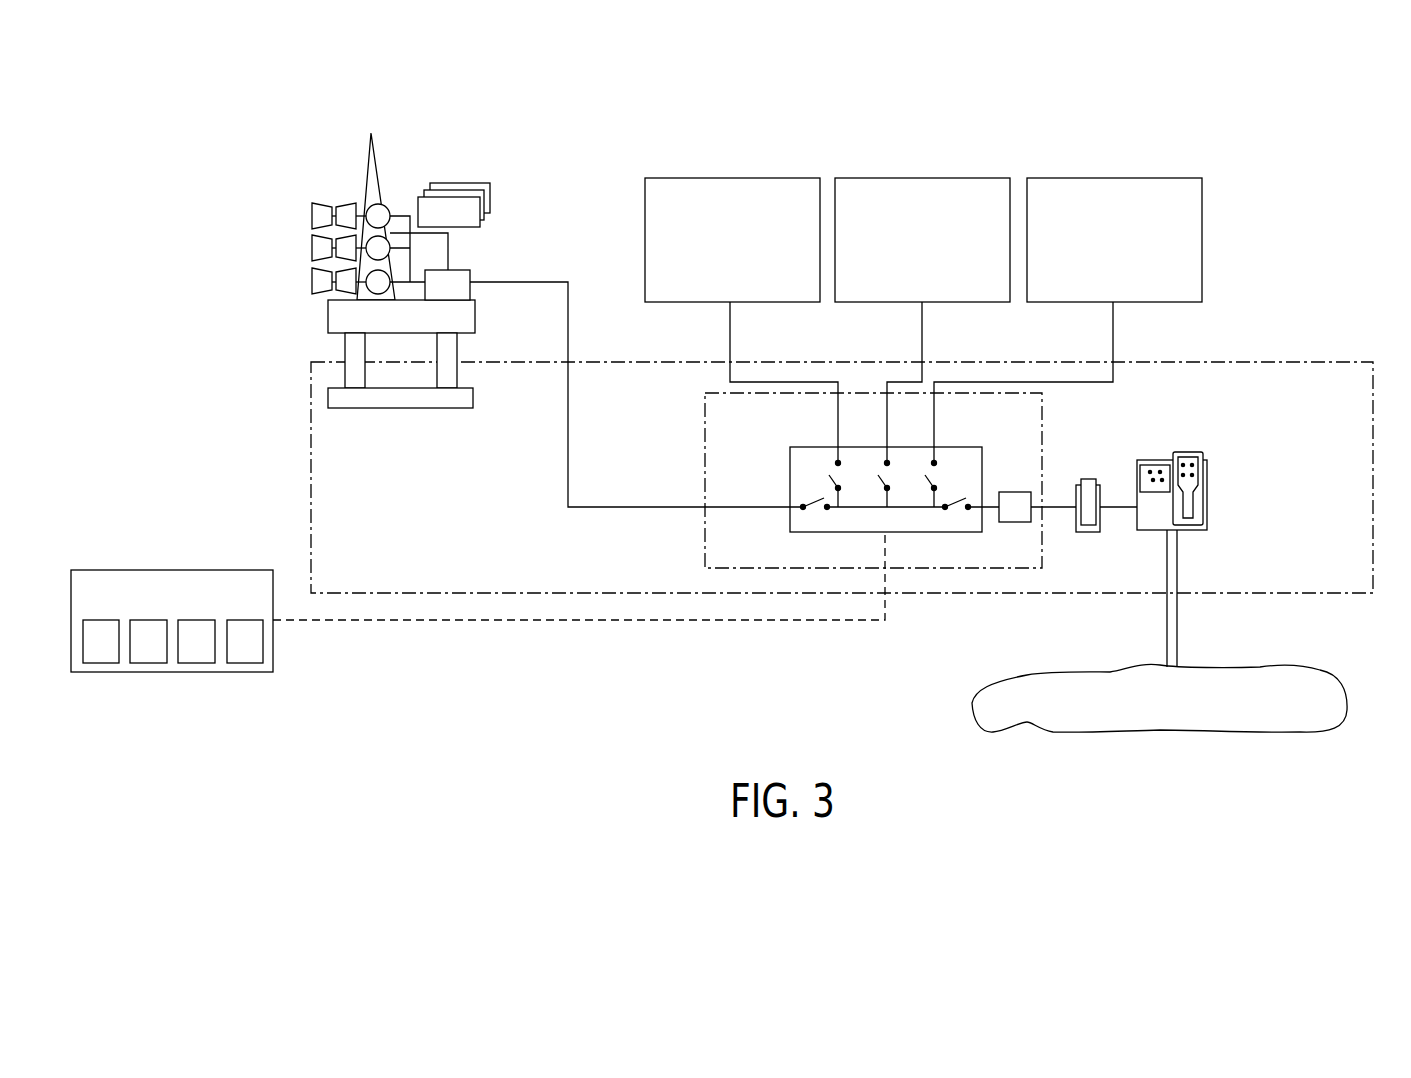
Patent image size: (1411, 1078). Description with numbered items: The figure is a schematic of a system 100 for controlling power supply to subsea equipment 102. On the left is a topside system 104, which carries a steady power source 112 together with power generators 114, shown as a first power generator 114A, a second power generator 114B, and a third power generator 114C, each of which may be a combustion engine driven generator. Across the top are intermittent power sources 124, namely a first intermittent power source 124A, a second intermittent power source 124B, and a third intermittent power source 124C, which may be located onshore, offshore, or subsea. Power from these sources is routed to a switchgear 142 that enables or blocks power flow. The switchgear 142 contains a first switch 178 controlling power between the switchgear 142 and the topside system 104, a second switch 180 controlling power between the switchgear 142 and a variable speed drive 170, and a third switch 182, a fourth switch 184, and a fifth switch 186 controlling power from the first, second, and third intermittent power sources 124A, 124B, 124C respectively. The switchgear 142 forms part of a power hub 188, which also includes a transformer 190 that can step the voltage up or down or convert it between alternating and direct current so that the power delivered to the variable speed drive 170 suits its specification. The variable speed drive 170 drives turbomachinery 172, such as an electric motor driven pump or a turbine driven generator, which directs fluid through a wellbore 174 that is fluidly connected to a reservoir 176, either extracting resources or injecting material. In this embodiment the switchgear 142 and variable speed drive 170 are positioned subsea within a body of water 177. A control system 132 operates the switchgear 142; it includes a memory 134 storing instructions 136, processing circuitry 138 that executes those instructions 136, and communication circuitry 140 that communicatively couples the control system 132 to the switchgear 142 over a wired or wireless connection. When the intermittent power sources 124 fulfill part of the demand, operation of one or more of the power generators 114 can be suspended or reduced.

The system 100 is at (1280, 136).
The subsea equipment 102 is at (1185, 570).
The topside system 104 is at (491, 311).
The steady power source 112 is at (462, 182).
The power generators 114 is at (285, 245).
The first power generator 114A is at (311, 215).
The second power generator 114B is at (311, 247).
The third power generator 114C is at (311, 280).
The intermittent power sources 124 is at (923, 289).
The first intermittent power source 124A is at (730, 178).
The second intermittent power source 124B is at (922, 178).
The third intermittent power source 124C is at (1113, 178).
The control system 132 is at (478, 633).
The memory 134 is at (100, 663).
The instructions 136 is at (148, 663).
The processing circuitry 138 is at (196, 663).
The communication circuitry 140 is at (245, 663).
The switchgear 142 is at (858, 486).
The variable speed drive 170 is at (1080, 493).
The turbomachinery 172 is at (1200, 467).
The wellbore 174 is at (1178, 618).
The reservoir 176 is at (1336, 675).
The body of water 177 is at (455, 499).
The first switch 178 is at (815, 512).
The second switch 180 is at (958, 512).
The third switch 182 is at (831, 475).
The fourth switch 184 is at (880, 476).
The fifth switch 186 is at (940, 477).
The power hub 188 is at (705, 428).
The transformer 190 is at (1015, 522).